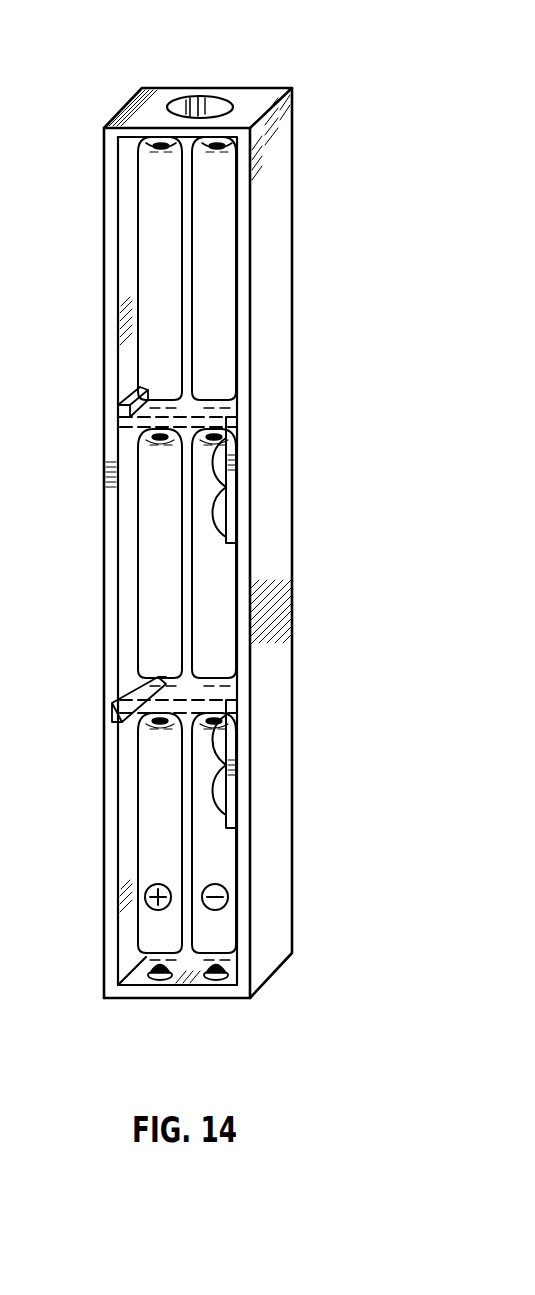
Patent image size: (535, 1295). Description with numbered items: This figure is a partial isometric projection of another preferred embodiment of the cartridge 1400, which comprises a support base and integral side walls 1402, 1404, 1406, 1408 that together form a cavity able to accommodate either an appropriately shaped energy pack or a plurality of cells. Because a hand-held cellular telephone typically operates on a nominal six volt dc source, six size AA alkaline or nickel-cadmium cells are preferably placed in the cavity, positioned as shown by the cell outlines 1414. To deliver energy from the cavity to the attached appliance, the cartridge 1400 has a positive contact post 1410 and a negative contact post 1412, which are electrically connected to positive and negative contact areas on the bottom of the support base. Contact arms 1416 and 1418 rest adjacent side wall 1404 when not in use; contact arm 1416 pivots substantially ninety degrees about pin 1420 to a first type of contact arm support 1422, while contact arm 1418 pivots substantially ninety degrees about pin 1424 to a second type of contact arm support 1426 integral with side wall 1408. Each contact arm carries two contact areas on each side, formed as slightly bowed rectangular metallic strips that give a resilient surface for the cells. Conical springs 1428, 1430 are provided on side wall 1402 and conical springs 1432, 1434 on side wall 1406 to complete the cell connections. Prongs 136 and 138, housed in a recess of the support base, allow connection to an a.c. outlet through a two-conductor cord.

The prong 136 is at (193, 108).
The prong 138 is at (207, 108).
The cartridge 1400 is at (212, 533).
The side wall 1402 is at (137, 993).
The side wall 1404 is at (272, 337).
The side wall 1406 is at (258, 100).
The side wall 1408 is at (108, 548).
The positive contact post 1410 is at (156, 917).
The negative contact post 1412 is at (218, 918).
The cell outlines 1414 is at (140, 628).
The contact arm 1416 is at (232, 490).
The contact arm 1418 is at (232, 778).
The pin 1420 is at (232, 423).
The first type of contact arm support 1422 is at (120, 413).
The pin 1424 is at (233, 704).
The second type of contact arm support 1426 is at (112, 727).
The conical spring 1428 is at (160, 974).
The conical spring 1430 is at (219, 974).
The conical spring 1432 is at (142, 147).
The conical spring 1434 is at (226, 150).